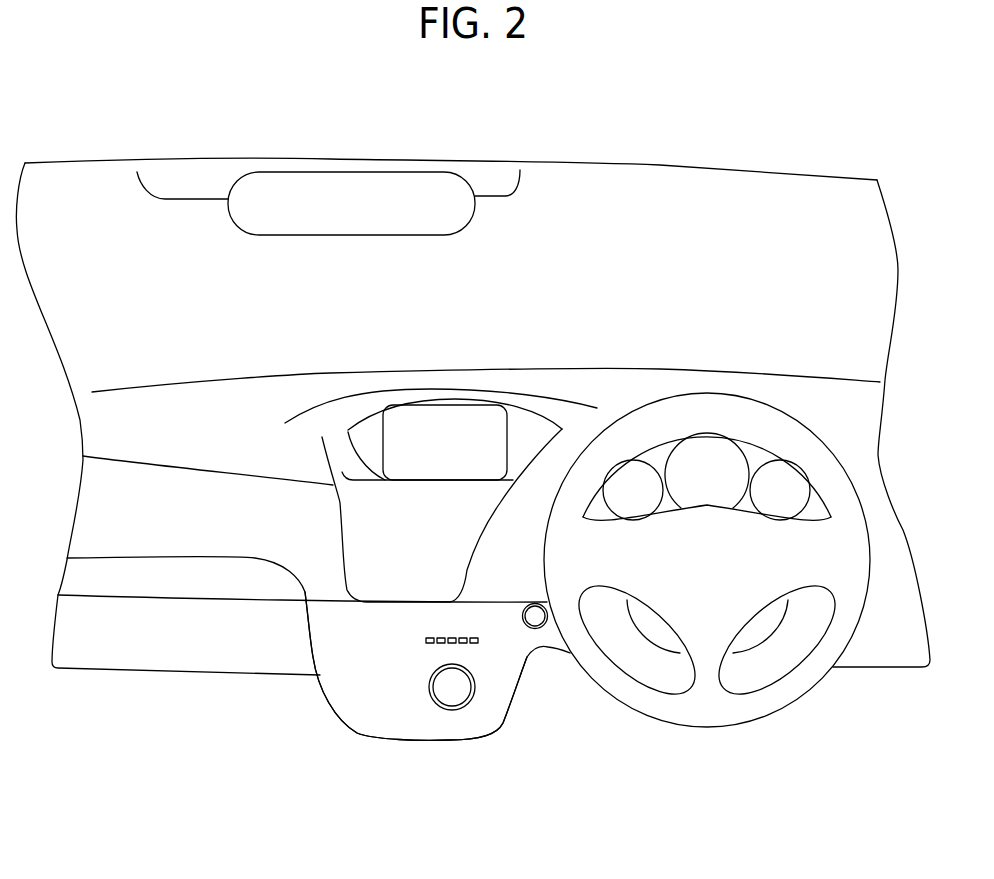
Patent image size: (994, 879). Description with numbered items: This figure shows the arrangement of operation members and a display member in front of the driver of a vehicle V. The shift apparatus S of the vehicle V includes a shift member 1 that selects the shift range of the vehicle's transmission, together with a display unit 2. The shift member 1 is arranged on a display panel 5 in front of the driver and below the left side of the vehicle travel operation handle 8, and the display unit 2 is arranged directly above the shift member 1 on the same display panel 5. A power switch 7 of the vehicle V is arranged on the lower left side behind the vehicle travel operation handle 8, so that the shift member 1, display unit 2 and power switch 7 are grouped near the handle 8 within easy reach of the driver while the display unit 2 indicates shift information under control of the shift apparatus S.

The vehicle V is at (146, 139).
The shift member 1 is at (452, 724).
The display unit 2 is at (413, 668).
The display panel 5 is at (468, 813).
The power switch 7 is at (552, 648).
The vehicle travel operation handle 8 is at (765, 394).
The shift apparatus S is at (345, 752).